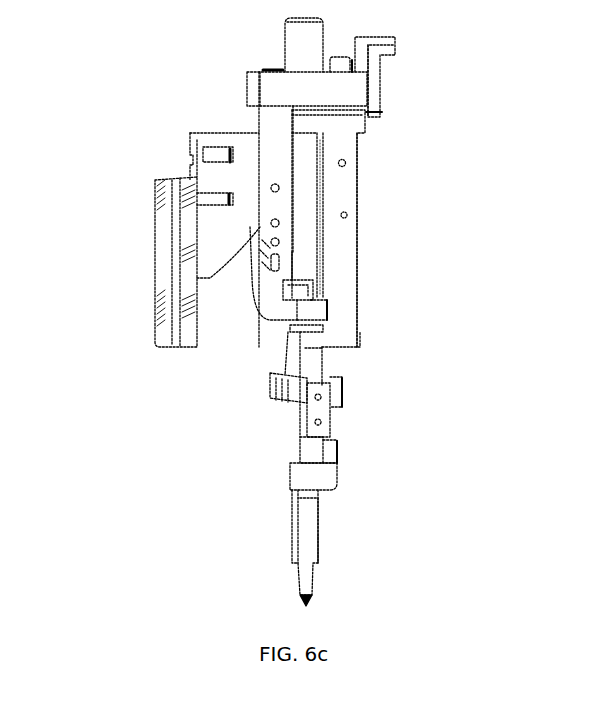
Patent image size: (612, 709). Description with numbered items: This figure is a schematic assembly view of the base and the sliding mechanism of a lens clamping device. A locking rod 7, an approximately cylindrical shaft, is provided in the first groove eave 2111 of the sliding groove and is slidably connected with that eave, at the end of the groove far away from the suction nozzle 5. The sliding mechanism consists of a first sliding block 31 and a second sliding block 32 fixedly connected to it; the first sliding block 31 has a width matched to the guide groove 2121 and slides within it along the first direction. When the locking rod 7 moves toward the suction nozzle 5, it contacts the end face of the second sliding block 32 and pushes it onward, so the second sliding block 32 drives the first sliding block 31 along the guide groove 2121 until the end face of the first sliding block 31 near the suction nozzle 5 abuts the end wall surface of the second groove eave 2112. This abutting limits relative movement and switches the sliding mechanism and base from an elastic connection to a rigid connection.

The locking rod 7 is at (340, 67).
The first groove eave 2111 is at (313, 85).
The second sliding block 32 is at (337, 232).
The second groove eave 2112 is at (310, 303).
The first sliding block 31 is at (300, 297).
The guide groove 2121 is at (262, 268).
The suction nozzle 5 is at (302, 552).